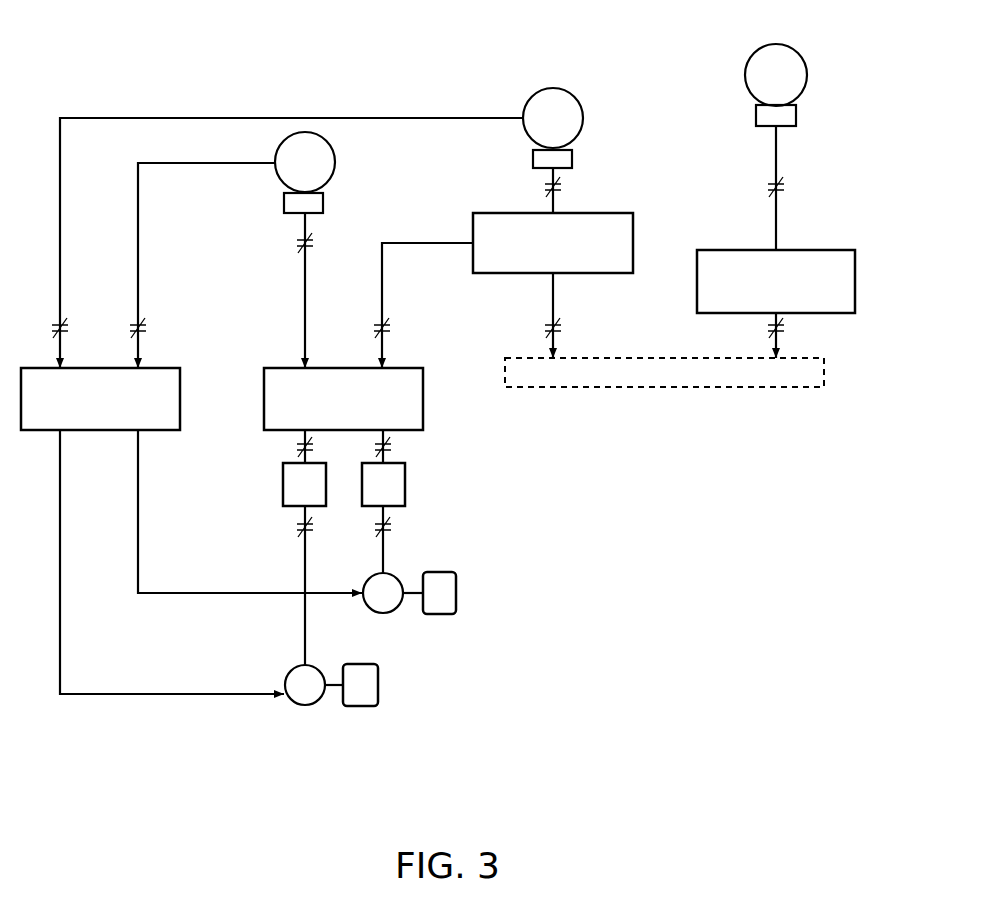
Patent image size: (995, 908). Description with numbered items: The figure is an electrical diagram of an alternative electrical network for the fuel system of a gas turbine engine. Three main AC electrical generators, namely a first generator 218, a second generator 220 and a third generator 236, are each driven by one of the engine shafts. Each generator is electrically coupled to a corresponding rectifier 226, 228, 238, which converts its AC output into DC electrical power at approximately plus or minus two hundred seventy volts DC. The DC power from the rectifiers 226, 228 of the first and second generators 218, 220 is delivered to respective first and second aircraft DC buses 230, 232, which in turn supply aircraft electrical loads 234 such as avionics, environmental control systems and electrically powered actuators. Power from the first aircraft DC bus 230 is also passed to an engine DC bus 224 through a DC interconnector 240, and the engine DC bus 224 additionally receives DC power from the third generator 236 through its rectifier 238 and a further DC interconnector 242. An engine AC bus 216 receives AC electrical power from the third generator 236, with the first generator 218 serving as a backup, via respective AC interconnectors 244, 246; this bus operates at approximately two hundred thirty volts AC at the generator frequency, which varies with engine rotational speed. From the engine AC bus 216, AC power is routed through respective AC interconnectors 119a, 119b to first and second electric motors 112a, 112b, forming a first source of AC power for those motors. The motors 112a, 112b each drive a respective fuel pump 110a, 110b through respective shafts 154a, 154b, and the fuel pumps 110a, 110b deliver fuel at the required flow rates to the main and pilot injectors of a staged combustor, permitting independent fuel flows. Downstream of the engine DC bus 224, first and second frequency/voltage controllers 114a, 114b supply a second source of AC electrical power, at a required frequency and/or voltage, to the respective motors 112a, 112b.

The AC interconnector 244 is at (165, 116).
The AC interconnector 246 is at (195, 162).
The third main AC electrical generator 236 is at (306, 132).
The rectifier 238 is at (325, 205).
The further DC interconnector 242 is at (303, 300).
The DC interconnector 240 is at (412, 243).
The engine AC bus 216 is at (188, 350).
The engine DC bus 224 is at (432, 350).
The first main AC electrical generator 218 is at (550, 90).
The rectifier 226 is at (575, 160).
The first aircraft DC bus 230 is at (637, 242).
The second main AC electrical generator 220 is at (750, 58).
The rectifier 228 is at (798, 113).
The second aircraft DC bus 232 is at (825, 250).
The aircraft electrical loads 234 is at (668, 388).
The first frequency/voltage controller 114a is at (283, 482).
The second frequency/voltage controller 114b is at (405, 486).
The shaft 154a is at (332, 690).
The shaft 154b is at (410, 585).
The first electric motor 112a is at (300, 706).
The second electric motor 112b is at (385, 614).
The fuel pump 110a is at (380, 695).
The fuel pump 110b is at (458, 592).
The AC interconnector 119a is at (66, 665).
The AC interconnector 119b is at (142, 560).